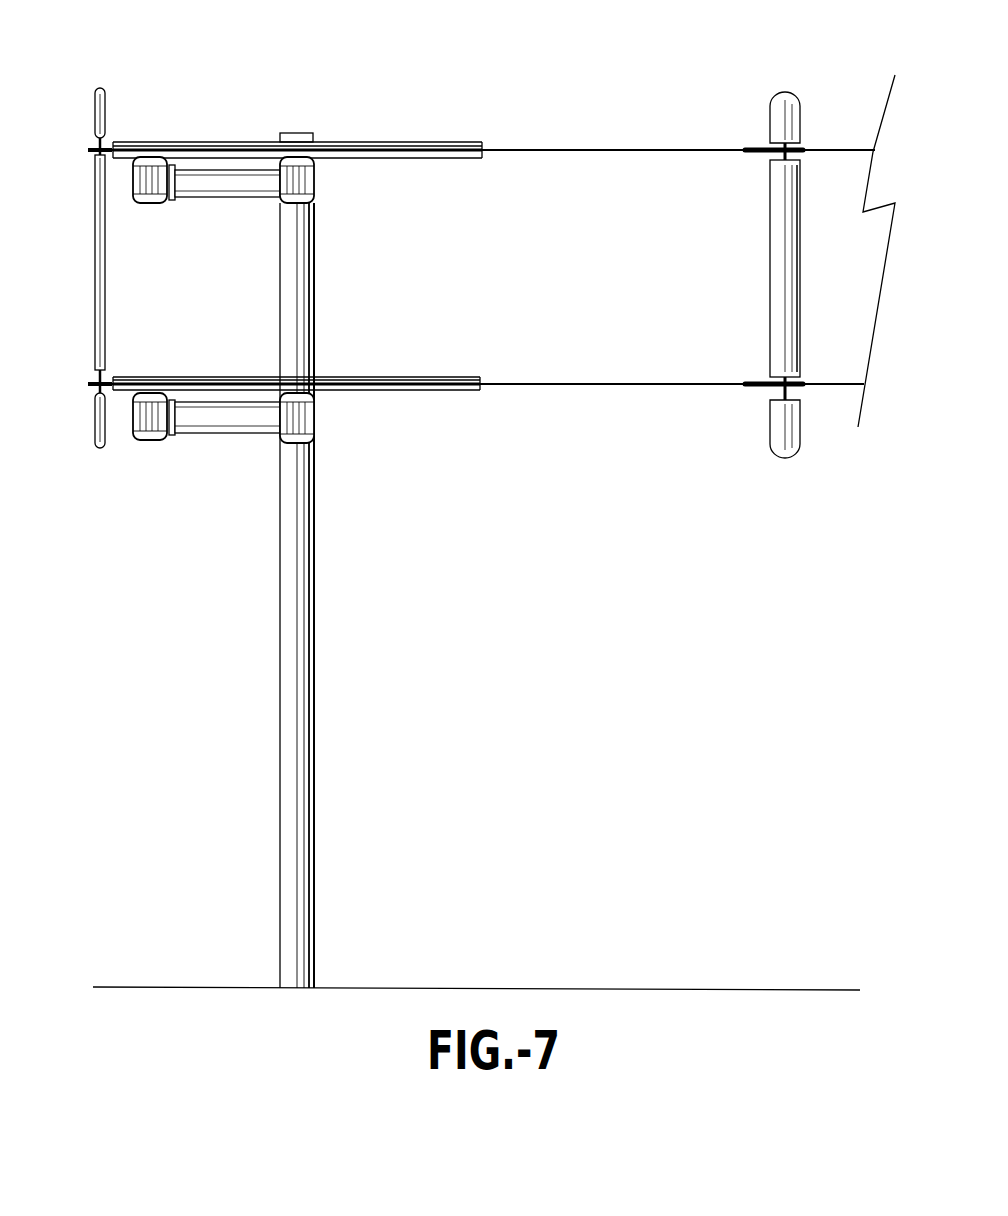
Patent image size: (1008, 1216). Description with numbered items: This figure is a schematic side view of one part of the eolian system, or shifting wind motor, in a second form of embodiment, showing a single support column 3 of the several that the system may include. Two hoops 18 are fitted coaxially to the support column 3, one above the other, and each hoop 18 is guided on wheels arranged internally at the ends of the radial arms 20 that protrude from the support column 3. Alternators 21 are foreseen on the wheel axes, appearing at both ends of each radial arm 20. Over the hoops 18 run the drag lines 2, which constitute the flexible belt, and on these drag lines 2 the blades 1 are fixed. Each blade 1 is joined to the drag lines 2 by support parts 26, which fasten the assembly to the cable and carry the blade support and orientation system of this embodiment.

The blade 1 is at (103, 105).
The drag line 2 is at (582, 150).
The support column 3 is at (287, 725).
The hoop 18 is at (417, 140).
The radial arm 20 is at (210, 178).
The alternator 21 is at (157, 140).
The support part 26 is at (94, 145).